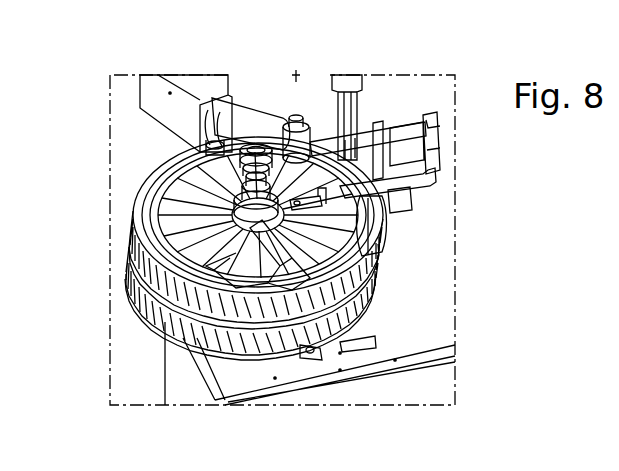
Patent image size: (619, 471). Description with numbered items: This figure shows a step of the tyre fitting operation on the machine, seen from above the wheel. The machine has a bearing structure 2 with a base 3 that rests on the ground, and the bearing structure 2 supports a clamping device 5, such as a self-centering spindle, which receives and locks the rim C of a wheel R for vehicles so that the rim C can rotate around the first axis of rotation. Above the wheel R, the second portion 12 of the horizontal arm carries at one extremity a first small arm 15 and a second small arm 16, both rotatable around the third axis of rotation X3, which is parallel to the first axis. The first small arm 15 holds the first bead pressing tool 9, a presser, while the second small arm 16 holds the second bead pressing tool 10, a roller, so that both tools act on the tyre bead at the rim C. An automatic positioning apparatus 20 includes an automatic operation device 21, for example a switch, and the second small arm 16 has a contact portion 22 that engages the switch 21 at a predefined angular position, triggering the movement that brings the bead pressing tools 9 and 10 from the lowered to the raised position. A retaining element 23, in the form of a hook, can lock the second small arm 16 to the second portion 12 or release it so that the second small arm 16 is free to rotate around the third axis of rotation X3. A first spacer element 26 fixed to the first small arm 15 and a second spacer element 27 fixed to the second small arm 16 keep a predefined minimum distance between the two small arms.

The bearing structure 2 is at (462, 378).
The base 3 is at (433, 320).
The clamping device 5 is at (150, 193).
The first bead pressing tool 9 is at (238, 335).
The second bead pressing tool 10 is at (385, 258).
The second portion of the horizontal arm 12 is at (253, 118).
The first small arm 15 is at (292, 300).
The second small arm 16 is at (440, 150).
The automatic positioning apparatus 20 is at (155, 100).
The automatic operation device 21 is at (218, 118).
The contact portion 22 is at (380, 136).
The retaining element 23 is at (360, 335).
The first spacer element 26 is at (408, 205).
The second spacer element 27 is at (437, 174).
The rim C is at (155, 162).
The tire P is at (142, 318).
The wheel R is at (118, 270).
The third axis of rotation X3 is at (312, 95).